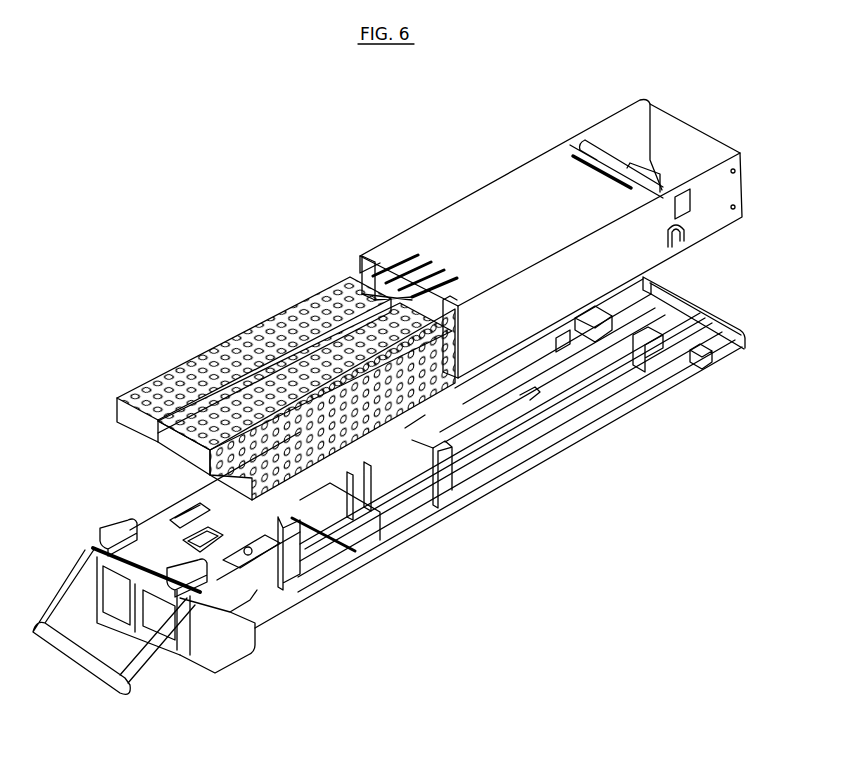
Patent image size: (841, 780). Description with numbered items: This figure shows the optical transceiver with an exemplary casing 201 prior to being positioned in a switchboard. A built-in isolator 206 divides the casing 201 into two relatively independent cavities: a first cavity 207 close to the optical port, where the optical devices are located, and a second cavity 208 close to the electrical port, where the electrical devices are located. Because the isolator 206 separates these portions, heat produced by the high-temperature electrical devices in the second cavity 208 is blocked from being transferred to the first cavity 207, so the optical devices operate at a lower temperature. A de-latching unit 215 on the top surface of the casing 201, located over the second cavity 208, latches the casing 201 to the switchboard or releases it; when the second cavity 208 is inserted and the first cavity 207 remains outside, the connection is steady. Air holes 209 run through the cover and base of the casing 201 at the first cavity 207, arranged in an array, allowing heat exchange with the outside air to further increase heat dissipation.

The casing 201 is at (322, 295).
The isolator 206 is at (425, 470).
The first cavity 207 is at (337, 525).
The second cavity 208 is at (553, 398).
The air holes 209 is at (273, 305).
The de-latching unit 215 is at (378, 287).